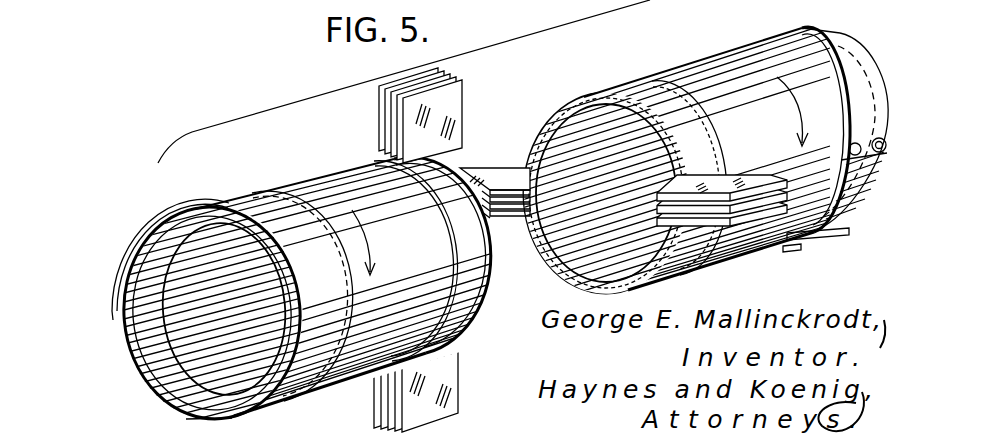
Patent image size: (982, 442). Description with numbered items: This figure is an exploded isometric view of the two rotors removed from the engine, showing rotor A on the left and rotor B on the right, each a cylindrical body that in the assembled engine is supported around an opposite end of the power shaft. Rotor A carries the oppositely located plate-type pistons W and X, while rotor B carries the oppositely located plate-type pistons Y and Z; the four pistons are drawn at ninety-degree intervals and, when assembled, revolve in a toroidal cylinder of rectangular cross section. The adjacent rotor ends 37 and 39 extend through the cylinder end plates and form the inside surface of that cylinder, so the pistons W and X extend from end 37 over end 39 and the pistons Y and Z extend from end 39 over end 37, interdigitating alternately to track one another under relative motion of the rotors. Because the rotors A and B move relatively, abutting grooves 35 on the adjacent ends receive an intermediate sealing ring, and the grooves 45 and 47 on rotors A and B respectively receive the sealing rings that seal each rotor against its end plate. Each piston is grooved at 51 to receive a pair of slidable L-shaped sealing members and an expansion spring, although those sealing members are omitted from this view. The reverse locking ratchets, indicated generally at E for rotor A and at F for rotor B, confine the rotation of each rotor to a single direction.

The abutting grooves 35 is at (488, 278).
The adjacent end of rotor A 37 is at (480, 235).
The adjacent end of rotor B 39 is at (692, 135).
The sealing ring groove on rotor A 45 is at (440, 210).
The sealing ring groove on rotor B 47 is at (718, 118).
The piston grooves 51 is at (572, 250).
The rotor A is at (398, 254).
The rotor B is at (704, 158).
The reverse locking ratchet for rotor A E is at (147, 406).
The reverse locking ratchet for rotor B F is at (849, 42).
The plate-type piston W is at (452, 101).
The plate-type piston X is at (450, 392).
The plate-type piston Y is at (502, 174).
The plate-type piston Z is at (747, 166).